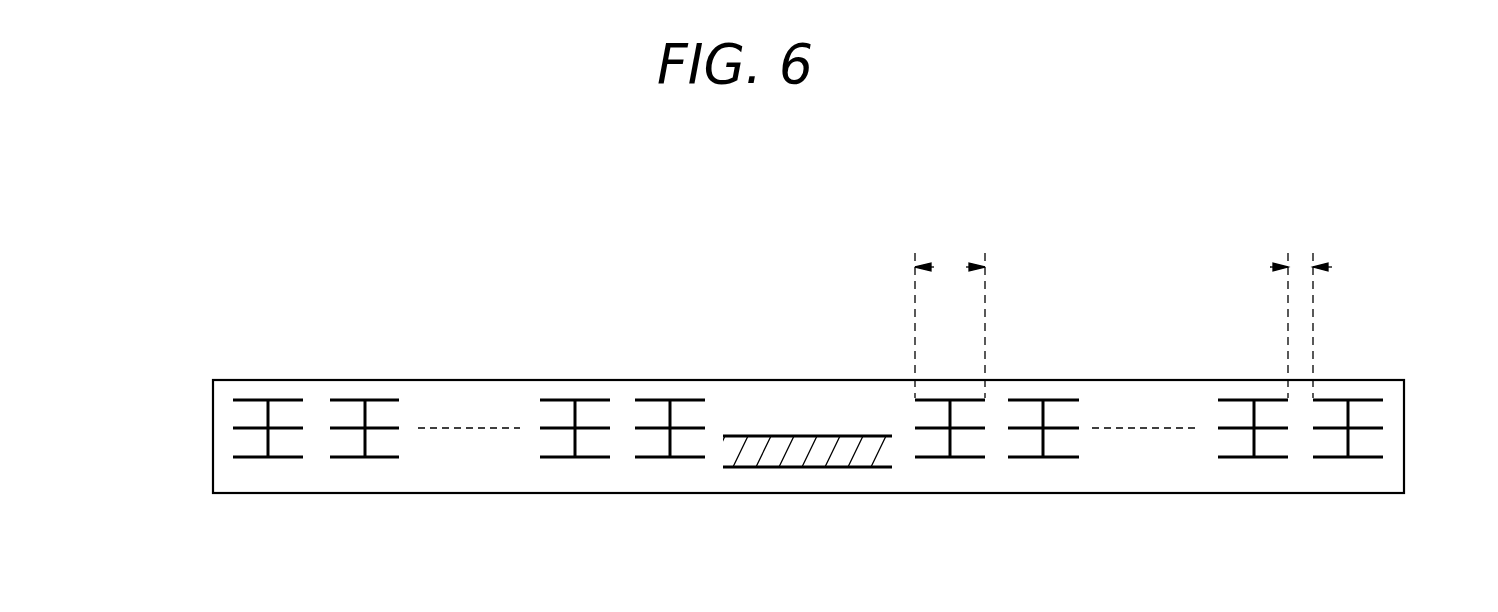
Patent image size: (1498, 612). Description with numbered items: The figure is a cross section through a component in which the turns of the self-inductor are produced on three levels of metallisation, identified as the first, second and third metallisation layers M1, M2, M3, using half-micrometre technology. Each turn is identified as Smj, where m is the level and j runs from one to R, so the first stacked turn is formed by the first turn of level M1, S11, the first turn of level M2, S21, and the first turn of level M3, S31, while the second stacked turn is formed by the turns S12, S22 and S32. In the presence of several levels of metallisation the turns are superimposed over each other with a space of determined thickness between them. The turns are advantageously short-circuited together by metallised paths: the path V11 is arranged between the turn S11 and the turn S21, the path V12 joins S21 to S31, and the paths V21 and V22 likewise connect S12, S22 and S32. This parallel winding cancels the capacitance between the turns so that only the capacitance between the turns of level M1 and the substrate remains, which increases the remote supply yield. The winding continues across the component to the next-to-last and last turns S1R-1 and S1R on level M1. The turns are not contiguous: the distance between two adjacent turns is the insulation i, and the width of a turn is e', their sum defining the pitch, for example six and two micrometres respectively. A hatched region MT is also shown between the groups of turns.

The first turn of level M1 S11 is at (247, 460).
The second turn of level M1 S12 is at (350, 458).
The first turn of level M2 S21 is at (248, 430).
The second turn of level M2 S22 is at (333, 428).
The first turn of level M3 S31 is at (248, 400).
The second turn of level M3 S32 is at (347, 400).
The metallised path V11 is at (265, 448).
The metallised path V12 is at (265, 418).
The metallised path V21 is at (367, 453).
The metallised path V22 is at (368, 417).
The metal layer MT is at (802, 425).
The width of a turn e' is at (950, 317).
The insulation i is at (1301, 317).
The (R-1)th turn of level M1 S1R-1 is at (1242, 458).
The Rth turn of level M1 S1R is at (1396, 455).
The first metallisation layer M1 is at (1383, 458).
The second metallisation layer M2 is at (1383, 429).
The third metallisation layer M3 is at (1383, 398).